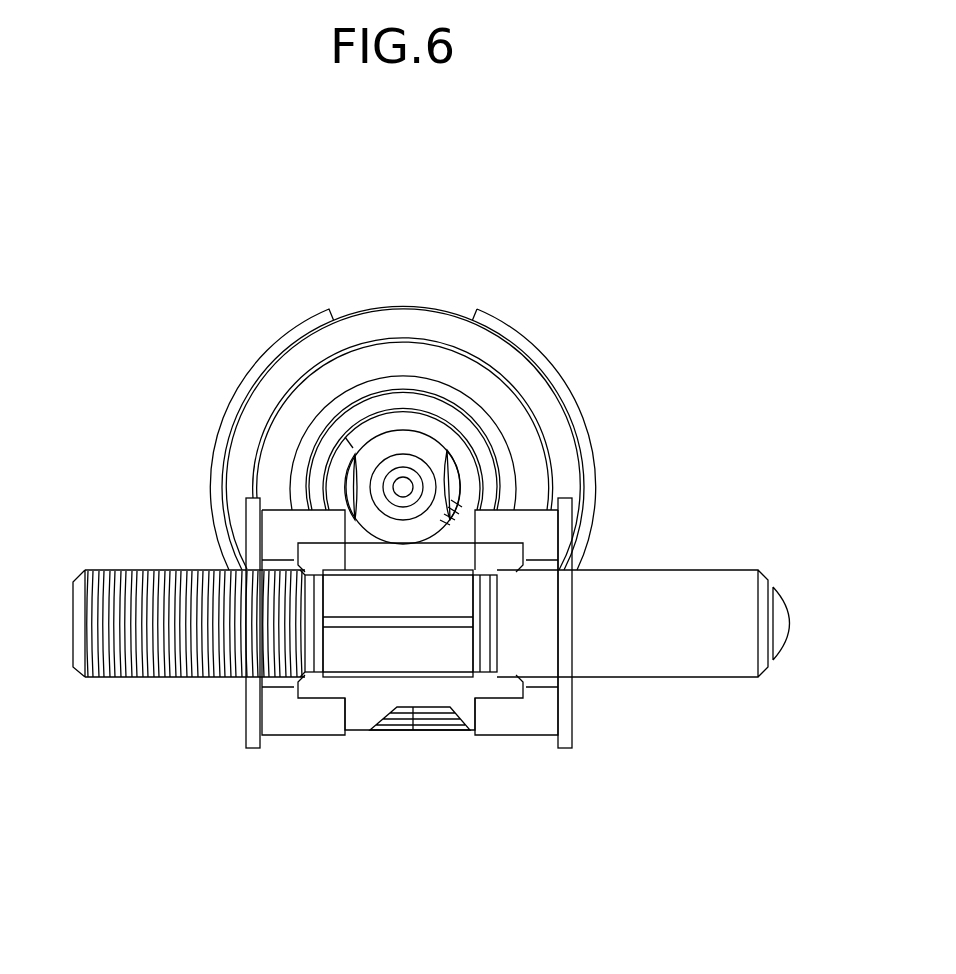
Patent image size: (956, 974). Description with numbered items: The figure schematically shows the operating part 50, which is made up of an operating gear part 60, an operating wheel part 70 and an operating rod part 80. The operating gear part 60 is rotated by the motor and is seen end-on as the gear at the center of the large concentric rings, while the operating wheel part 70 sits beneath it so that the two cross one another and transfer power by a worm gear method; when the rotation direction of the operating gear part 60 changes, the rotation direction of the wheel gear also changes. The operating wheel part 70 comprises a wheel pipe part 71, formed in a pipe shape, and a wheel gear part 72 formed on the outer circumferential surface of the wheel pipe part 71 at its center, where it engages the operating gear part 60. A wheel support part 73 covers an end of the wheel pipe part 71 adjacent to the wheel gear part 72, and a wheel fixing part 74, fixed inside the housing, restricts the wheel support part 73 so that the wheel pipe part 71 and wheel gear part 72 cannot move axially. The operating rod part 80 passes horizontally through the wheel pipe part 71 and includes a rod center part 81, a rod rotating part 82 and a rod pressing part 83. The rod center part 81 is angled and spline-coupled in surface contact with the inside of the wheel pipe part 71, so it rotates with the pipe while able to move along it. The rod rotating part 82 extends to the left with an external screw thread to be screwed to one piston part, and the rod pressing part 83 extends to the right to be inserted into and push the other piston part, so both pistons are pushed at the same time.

The operating part 50 is at (754, 212).
The operating gear part 60 is at (457, 472).
The operating wheel part 70 is at (132, 525).
The wheel pipe part 71 is at (282, 520).
The wheel gear part 72 is at (327, 488).
The wheel support part 73 is at (320, 553).
The wheel fixing part 74 is at (253, 515).
The operating rod part 80 is at (487, 898).
The rod center part 81 is at (377, 643).
The rod rotating part 82 is at (188, 680).
The rod pressing part 83 is at (638, 653).